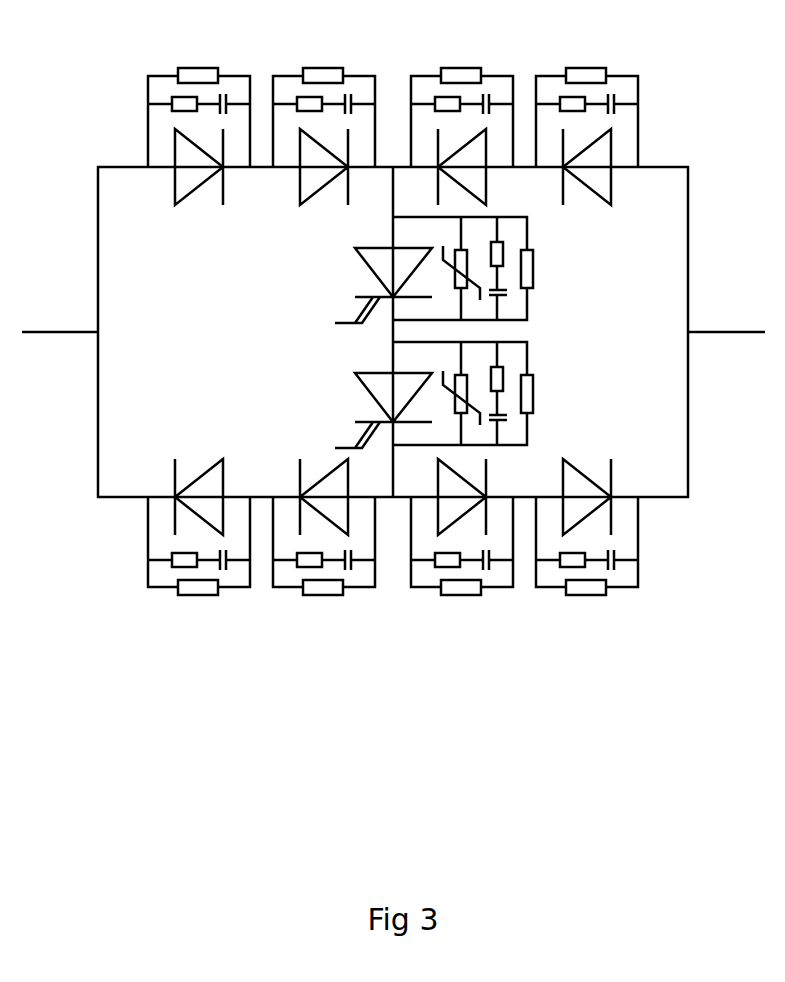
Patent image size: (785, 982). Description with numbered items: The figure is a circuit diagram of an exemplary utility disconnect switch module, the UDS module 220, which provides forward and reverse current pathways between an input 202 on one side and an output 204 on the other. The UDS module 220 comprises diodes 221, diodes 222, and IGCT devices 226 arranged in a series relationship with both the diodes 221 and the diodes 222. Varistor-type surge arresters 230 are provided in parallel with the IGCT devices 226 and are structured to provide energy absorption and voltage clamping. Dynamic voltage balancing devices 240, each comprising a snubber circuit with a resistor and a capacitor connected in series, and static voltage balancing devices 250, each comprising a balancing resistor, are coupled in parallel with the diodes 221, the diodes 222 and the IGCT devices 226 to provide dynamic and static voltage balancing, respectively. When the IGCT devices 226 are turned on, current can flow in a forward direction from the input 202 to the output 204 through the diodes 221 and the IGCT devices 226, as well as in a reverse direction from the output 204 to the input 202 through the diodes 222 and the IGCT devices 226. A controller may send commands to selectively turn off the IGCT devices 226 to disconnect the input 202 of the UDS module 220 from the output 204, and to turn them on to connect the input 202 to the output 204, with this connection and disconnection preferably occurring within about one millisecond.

The input 202 is at (56, 331).
The output 204 is at (724, 331).
The UDS module 220 is at (684, 51).
The diodes 221 is at (173, 190).
The diodes 222 is at (488, 190).
The IGCT devices 226 is at (371, 272).
The varistor-type surge arresters 230 is at (466, 249).
The dynamic voltage balancing devices 240 is at (193, 118).
The static voltage balancing devices 250 is at (199, 68).